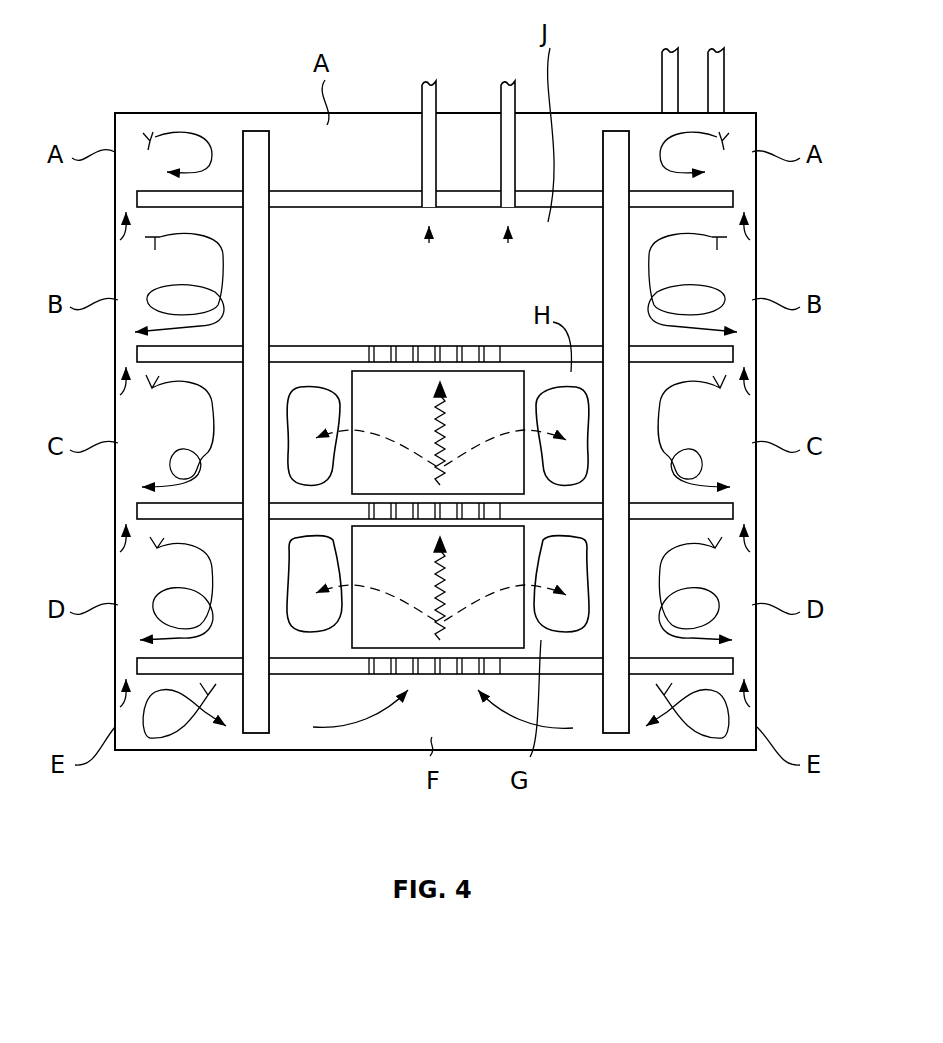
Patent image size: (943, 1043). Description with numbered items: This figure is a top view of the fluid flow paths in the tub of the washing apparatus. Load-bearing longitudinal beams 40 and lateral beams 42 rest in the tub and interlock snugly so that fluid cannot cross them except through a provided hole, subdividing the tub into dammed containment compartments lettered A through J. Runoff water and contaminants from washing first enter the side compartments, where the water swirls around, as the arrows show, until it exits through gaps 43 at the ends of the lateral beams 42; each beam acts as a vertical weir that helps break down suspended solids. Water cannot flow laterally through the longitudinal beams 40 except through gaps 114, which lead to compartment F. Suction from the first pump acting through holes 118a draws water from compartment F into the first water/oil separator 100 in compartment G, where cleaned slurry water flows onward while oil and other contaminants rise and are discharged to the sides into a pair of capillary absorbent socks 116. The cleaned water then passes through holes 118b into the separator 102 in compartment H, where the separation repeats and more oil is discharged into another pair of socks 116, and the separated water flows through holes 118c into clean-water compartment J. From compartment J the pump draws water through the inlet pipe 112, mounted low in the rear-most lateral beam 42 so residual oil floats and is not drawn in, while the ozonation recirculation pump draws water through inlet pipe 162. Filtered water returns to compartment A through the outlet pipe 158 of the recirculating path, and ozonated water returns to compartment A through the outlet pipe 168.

The longitudinal beams 40 is at (253, 131).
The lateral beams 42 is at (137, 193).
The gaps 43 is at (118, 237).
The first water/oil separator 100 is at (374, 640).
The separator 102 is at (457, 383).
The inlet pipe 112 is at (421, 92).
The gaps 114 is at (256, 740).
The capillary absorbent socks 116 is at (311, 396).
The holes 118a is at (462, 672).
The holes 118b is at (490, 511).
The holes 118c is at (368, 355).
The outlet pipe 158 is at (661, 66).
The inlet pipe 162 is at (500, 92).
The outlet pipe 168 is at (725, 66).